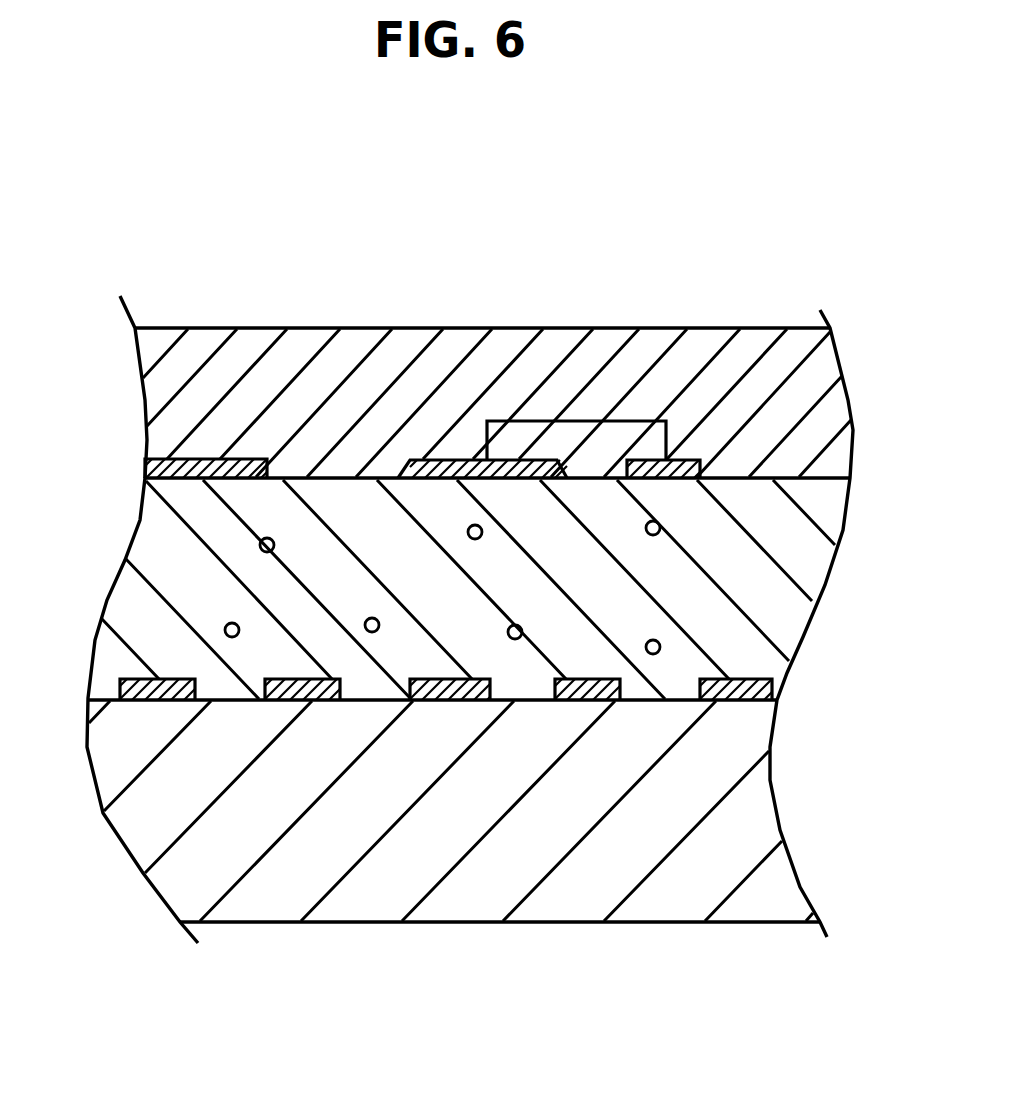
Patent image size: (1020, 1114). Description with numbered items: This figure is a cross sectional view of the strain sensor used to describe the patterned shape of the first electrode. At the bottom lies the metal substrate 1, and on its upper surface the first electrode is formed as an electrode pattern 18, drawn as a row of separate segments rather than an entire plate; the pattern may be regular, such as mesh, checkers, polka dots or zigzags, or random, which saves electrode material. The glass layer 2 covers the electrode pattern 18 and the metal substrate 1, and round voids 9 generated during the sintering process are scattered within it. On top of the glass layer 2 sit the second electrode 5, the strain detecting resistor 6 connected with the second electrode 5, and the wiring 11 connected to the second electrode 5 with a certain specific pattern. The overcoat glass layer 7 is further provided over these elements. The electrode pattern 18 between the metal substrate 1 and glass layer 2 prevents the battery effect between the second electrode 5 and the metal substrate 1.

The metal substrate 1 is at (757, 823).
The glass layer 2 is at (803, 552).
The second electrode 5 is at (418, 460).
The strain detecting resistor 6 is at (560, 433).
The overcoat glass layer 7 is at (830, 370).
The round voids 9 is at (258, 541).
The wiring 11 is at (213, 458).
The electrode pattern 18 is at (153, 677).